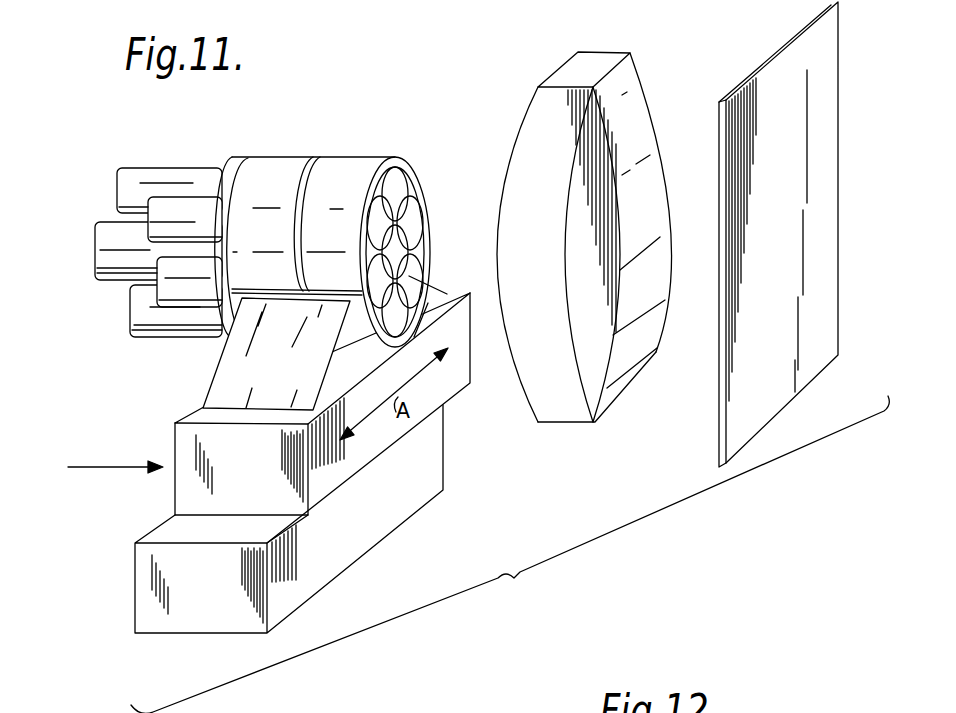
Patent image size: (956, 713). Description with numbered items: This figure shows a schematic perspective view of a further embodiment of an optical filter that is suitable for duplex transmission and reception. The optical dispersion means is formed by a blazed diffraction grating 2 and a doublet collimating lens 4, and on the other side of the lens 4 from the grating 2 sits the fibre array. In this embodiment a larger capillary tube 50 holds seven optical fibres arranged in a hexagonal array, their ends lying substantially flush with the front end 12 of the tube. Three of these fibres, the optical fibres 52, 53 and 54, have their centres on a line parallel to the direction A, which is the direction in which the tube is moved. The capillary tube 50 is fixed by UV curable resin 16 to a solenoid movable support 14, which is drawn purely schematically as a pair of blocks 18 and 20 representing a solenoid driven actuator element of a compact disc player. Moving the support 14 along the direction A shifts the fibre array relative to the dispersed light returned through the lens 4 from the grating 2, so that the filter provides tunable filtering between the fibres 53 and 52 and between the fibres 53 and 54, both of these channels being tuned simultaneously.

The blazed diffraction grating 2 is at (775, 392).
The doublet collimating lens 4 is at (564, 425).
The front end of the capillary tube 12 is at (215, 178).
The solenoid movable support 14 is at (100, 468).
The UV curable resin 16 is at (240, 352).
The block 18 is at (432, 402).
The block 20 is at (394, 516).
The larger capillary tube 50 is at (331, 157).
The optical fibre 52 is at (181, 298).
The optical fibre 53 is at (398, 243).
The optical fibre 54 is at (416, 274).